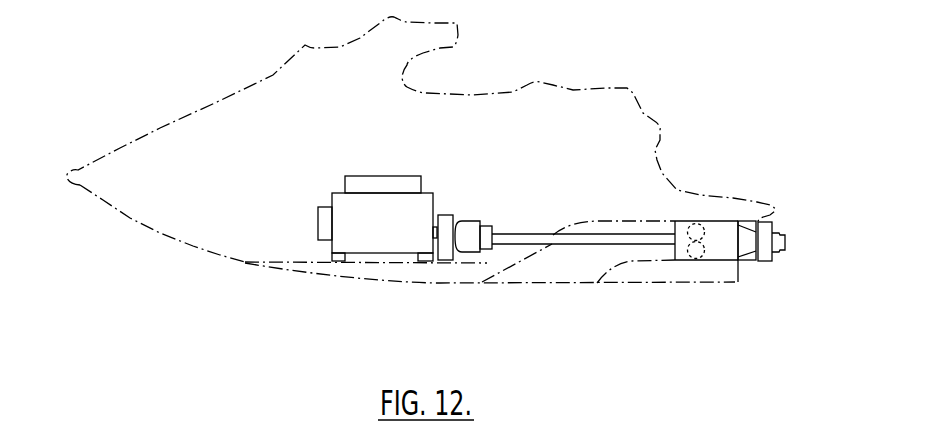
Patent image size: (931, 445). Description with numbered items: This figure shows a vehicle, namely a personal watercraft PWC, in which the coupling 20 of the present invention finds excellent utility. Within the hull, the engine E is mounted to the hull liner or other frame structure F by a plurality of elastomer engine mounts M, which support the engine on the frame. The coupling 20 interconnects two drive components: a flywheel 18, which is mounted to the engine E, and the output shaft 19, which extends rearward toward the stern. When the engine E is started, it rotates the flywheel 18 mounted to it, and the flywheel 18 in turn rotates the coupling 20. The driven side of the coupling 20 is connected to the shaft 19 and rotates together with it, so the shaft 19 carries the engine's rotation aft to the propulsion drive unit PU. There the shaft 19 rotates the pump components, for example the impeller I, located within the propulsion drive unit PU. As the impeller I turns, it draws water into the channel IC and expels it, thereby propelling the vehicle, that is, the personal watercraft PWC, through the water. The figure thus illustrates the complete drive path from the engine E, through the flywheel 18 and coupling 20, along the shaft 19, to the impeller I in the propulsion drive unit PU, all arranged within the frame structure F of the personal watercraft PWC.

The personal watercraft PWC is at (556, 83).
The hull liner or other frame structure F is at (288, 263).
The engine E is at (383, 254).
The elastomer engine mounts M is at (337, 262).
The flywheel 18 is at (442, 262).
The coupling 20 is at (467, 250).
The output shaft 19 is at (584, 245).
The channel IC is at (527, 252).
The propulsion drive unit PU is at (725, 258).
The impeller I is at (697, 259).